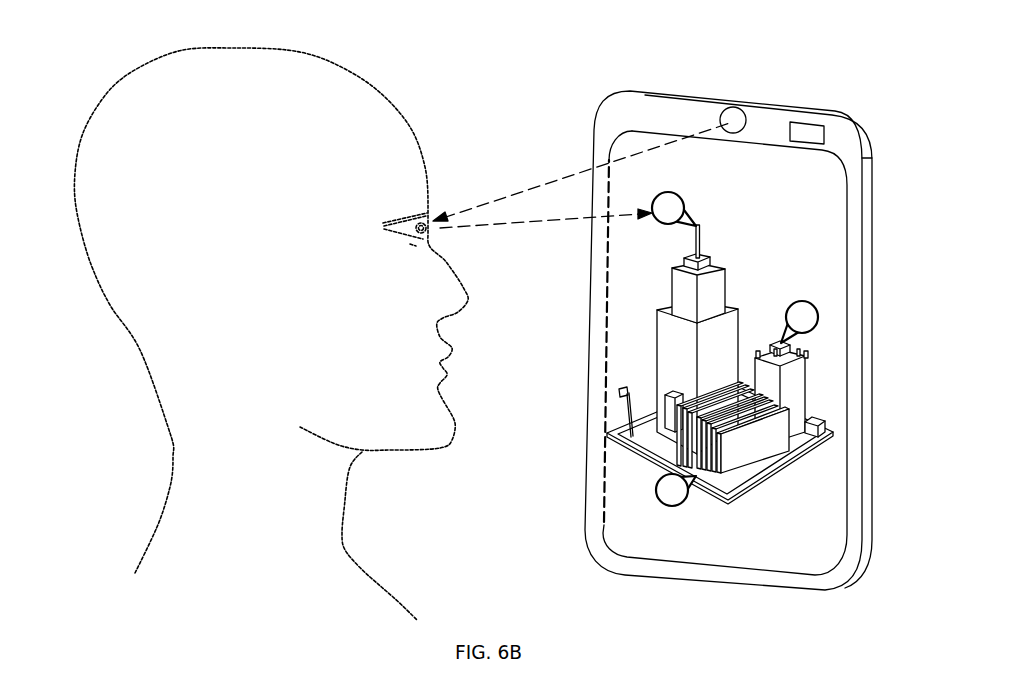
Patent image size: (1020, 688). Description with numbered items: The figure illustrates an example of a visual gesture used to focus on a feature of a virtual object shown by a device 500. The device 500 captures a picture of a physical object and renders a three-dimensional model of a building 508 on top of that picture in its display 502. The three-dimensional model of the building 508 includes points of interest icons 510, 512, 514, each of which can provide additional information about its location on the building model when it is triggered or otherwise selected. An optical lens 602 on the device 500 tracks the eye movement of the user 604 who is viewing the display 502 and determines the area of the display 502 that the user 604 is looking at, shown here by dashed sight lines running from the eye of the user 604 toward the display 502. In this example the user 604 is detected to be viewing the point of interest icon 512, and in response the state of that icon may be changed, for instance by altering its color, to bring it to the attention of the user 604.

The device 500 is at (617, 112).
The display 502 is at (690, 153).
The three-dimensional model of a building 508 is at (636, 362).
The point of interest icon 510 is at (813, 306).
The point of interest icon 512 is at (655, 217).
The point of interest icon 514 is at (660, 497).
The optical lens 602 is at (733, 118).
The user 604 is at (243, 57).